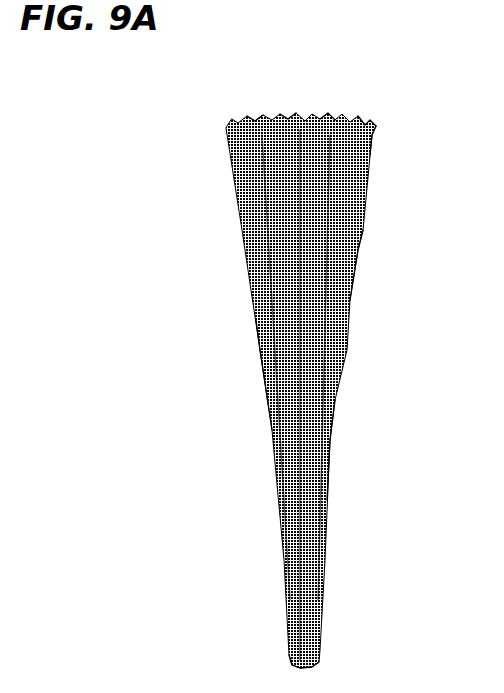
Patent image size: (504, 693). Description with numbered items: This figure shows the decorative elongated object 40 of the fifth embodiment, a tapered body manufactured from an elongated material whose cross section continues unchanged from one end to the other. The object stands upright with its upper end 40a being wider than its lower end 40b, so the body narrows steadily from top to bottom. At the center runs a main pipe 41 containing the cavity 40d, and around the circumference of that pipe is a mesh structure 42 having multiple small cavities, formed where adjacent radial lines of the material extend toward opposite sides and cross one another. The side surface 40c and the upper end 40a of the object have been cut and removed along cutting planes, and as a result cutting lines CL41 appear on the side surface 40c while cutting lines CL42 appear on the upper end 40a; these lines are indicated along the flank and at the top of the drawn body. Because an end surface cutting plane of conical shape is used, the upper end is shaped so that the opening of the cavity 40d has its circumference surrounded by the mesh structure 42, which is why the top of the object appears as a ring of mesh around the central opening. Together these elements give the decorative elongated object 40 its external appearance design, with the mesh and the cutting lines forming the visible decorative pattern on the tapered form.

The decorative elongated object 40 is at (222, 300).
The main pipe 41 is at (255, 119).
The cavity 40d is at (290, 117).
The mesh structure 42 is at (331, 113).
The upper end 40a is at (366, 128).
The cutting lines CL42 is at (373, 145).
The cutting lines CL41 is at (358, 248).
The side surface 40c is at (264, 376).
The lower end 40b is at (290, 665).